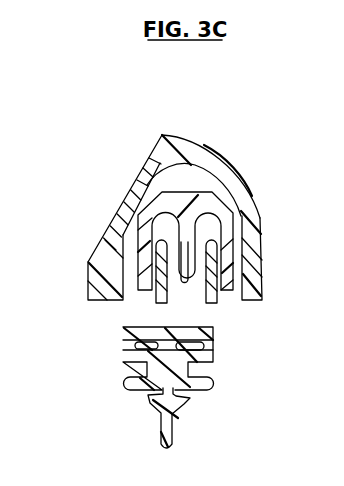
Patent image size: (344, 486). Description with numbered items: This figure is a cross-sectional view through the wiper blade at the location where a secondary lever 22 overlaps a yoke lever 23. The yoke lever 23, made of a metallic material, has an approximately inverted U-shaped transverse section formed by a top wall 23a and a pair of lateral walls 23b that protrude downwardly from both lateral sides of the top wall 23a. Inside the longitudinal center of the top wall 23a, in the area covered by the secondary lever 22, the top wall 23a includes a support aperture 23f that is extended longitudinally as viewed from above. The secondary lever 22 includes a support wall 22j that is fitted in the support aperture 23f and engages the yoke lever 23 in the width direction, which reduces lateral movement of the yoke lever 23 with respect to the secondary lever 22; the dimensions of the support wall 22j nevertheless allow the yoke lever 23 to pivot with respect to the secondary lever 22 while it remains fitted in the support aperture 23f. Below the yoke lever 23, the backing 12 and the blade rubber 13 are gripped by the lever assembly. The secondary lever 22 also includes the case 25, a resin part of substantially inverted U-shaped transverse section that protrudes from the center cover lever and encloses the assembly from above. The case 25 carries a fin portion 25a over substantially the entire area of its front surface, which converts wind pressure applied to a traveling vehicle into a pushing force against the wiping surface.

The backing 12 is at (215, 346).
The blade rubber 13 is at (174, 432).
The secondary lever 22 is at (132, 237).
The support wall 22j is at (182, 277).
The yoke lever 23 is at (152, 262).
The top wall 23a is at (183, 230).
The lateral wall 23b is at (200, 264).
The support aperture 23f is at (222, 208).
The case 25 is at (164, 134).
The fin portion 25a is at (125, 208).